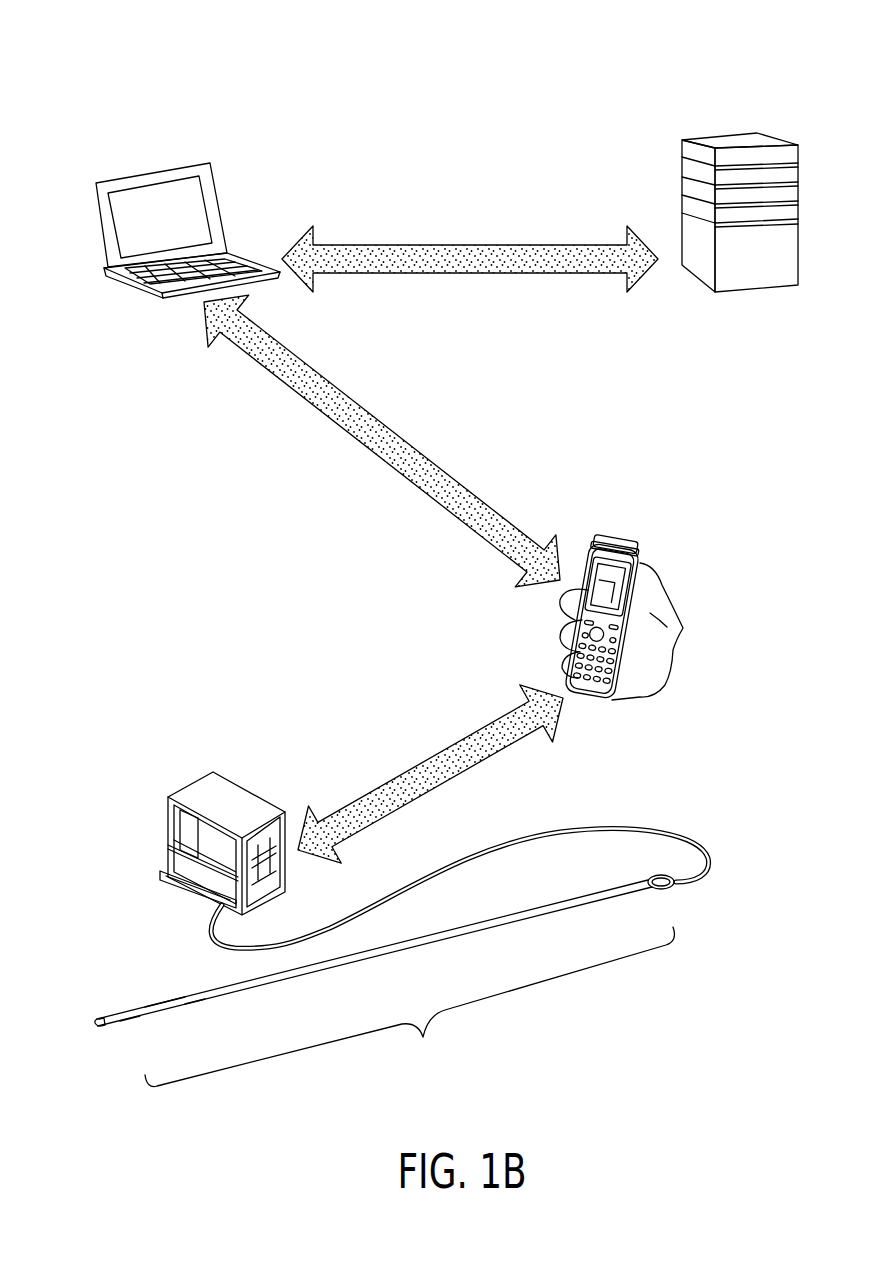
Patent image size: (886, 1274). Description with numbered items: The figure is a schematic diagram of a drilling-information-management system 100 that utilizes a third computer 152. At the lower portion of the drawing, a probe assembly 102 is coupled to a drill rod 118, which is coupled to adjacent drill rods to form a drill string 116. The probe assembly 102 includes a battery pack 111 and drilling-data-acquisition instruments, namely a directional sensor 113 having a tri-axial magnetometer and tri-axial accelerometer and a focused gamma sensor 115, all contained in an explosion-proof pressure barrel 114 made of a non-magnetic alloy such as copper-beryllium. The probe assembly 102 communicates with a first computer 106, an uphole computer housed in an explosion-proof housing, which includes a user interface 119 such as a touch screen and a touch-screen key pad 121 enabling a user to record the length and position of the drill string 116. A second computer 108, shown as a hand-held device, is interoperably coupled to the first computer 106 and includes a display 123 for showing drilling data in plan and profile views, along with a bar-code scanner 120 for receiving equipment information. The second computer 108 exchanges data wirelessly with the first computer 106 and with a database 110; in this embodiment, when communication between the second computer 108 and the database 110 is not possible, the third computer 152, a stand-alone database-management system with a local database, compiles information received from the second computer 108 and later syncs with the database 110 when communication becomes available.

The drilling-information-management system 100 is at (66, 58).
The third computer 152 is at (162, 172).
The database 110 is at (758, 140).
The second computer 108 is at (600, 540).
The bar-code scanner 120 is at (613, 540).
The display 123 is at (588, 550).
The first computer 106 is at (248, 800).
The user interface 119 is at (204, 838).
The touch-screen key pad 121 is at (165, 880).
The drill rod 118 is at (435, 932).
The probe assembly 102 is at (105, 1017).
The focused gamma sensor 115 is at (155, 1006).
The battery pack 111 is at (172, 1003).
The directional sensor 113 is at (130, 1021).
The explosion-proof pressure barrel 114 is at (195, 1006).
The drill string 116 is at (409, 1007).